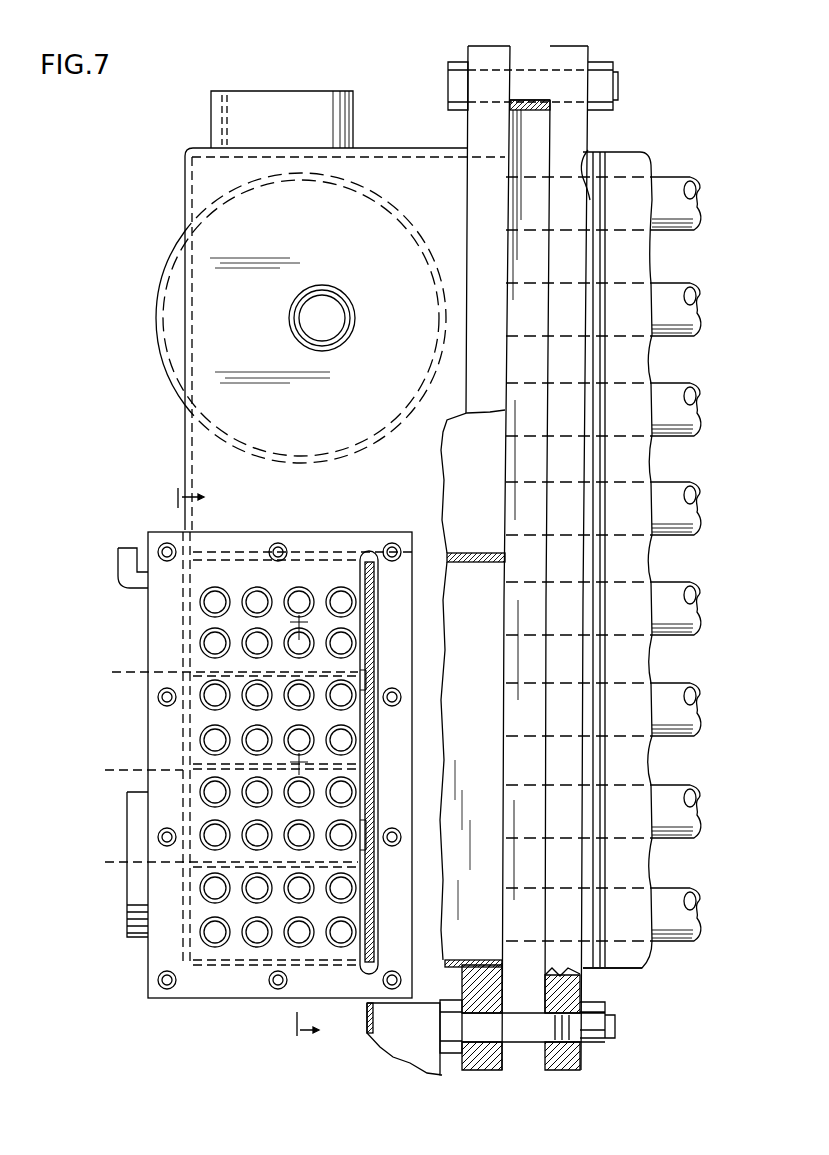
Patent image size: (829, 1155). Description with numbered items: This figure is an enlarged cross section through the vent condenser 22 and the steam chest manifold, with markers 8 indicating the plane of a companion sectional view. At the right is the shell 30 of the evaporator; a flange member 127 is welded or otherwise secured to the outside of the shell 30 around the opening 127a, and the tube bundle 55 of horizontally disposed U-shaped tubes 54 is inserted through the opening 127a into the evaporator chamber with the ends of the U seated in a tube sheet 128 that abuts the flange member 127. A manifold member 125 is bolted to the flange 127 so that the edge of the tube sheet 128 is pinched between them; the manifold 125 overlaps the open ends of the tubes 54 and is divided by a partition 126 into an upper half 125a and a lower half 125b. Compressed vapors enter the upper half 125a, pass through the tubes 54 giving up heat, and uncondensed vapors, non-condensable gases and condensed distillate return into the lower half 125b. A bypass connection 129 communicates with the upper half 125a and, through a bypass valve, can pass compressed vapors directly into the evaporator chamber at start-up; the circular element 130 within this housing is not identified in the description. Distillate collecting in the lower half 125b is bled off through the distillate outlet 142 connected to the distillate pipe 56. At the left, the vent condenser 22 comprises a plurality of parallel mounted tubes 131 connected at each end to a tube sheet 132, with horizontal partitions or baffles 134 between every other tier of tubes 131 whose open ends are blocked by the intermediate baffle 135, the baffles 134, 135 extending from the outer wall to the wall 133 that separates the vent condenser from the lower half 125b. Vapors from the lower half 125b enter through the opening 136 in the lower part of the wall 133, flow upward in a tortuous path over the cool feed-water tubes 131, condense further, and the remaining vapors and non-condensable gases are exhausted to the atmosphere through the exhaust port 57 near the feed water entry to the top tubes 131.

The section line 8- 8 is at (254, 765).
The vent condenser 22 is at (155, 720).
The shell 30 is at (638, 157).
The U-shaped tubes 54 is at (690, 235).
The tube bundle 55 is at (690, 958).
The distillate pipe 56 is at (421, 1063).
The exhaust port 57 is at (118, 560).
The manifold member 125 is at (178, 470).
The upper half of manifold 125a is at (455, 440).
The lower half of manifold 125b is at (470, 845).
The partition 126 is at (470, 552).
The flange member 127 is at (566, 52).
The opening in shell 127a is at (585, 152).
The tube sheet 128 is at (525, 113).
The bypass connection 129 is at (350, 91).
The circular chamber 130 is at (160, 278).
The vent condenser tubes 131 is at (200, 830).
The tube sheet 132 is at (193, 582).
The wall 133 is at (372, 767).
The horizontal partitions or baffles 134 is at (211, 769).
The intermediate baffle 135 is at (210, 771).
The opening 136 is at (375, 940).
The distillate outlet 142 is at (398, 1010).